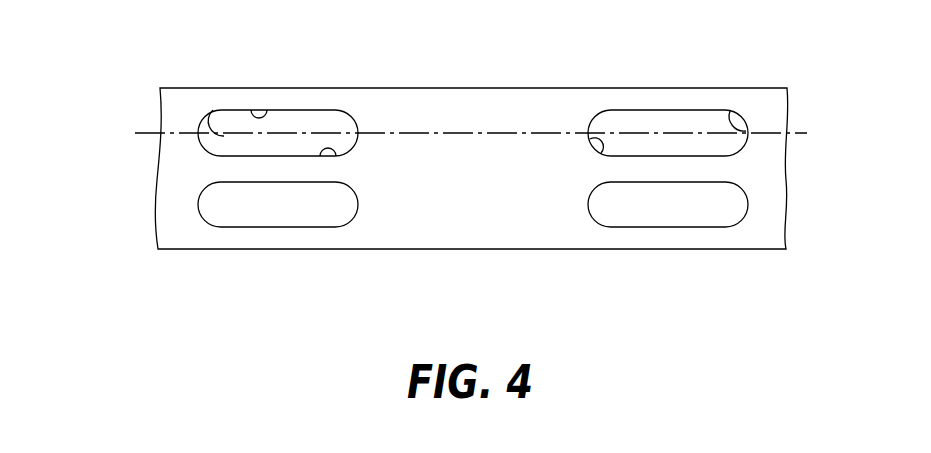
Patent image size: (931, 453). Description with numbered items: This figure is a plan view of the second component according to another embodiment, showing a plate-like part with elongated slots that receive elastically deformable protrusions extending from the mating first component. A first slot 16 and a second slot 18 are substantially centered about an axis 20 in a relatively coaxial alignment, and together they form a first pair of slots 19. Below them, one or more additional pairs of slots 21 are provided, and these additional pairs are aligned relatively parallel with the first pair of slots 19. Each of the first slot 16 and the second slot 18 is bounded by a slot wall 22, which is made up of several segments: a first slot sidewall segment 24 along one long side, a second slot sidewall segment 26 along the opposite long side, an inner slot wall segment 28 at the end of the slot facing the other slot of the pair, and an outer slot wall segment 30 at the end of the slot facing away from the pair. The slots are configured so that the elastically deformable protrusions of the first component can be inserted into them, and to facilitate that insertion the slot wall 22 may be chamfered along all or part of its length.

The first slot 16 is at (317, 109).
The second slot 18 is at (643, 109).
The first pair of slots 19 is at (473, 89).
The axis 20 is at (156, 131).
The additional pairs of slots 21 is at (596, 229).
The slot wall 22 is at (232, 118).
The first slot sidewall segment 24 is at (261, 118).
The second slot sidewall segment 26 is at (336, 150).
The inner slot wall segment 28 is at (597, 151).
The outer slot wall segment 30 is at (731, 111).